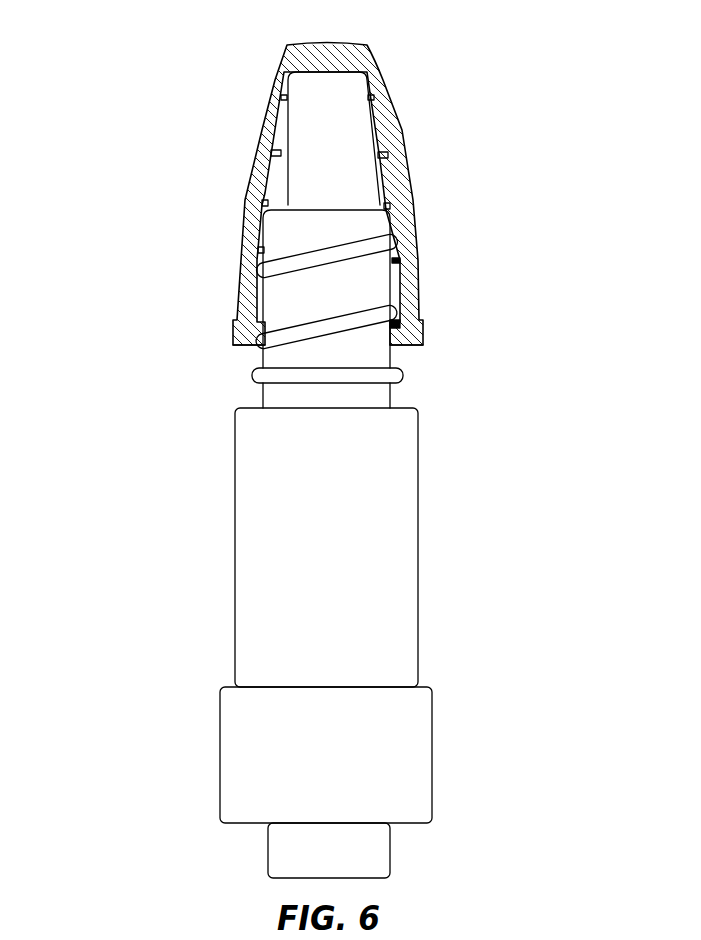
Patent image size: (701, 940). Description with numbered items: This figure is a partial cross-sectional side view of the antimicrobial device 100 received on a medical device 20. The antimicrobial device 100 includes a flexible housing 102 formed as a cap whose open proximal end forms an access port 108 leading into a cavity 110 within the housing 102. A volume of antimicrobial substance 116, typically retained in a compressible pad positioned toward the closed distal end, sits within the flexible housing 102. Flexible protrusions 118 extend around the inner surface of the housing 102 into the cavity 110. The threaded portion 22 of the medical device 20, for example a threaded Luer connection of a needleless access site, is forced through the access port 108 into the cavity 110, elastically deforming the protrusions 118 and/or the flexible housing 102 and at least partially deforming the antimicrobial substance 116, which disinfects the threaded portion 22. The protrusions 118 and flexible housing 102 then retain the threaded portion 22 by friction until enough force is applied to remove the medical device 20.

The antimicrobial device 100 is at (196, 70).
The flexible housing 102 is at (415, 282).
The cavity 110 is at (382, 118).
The volume of antimicrobial substance 116 is at (353, 183).
The protrusions 118 is at (270, 97).
The threaded portion 22 is at (373, 330).
The access port 108 is at (253, 353).
The medical device 20 is at (354, 717).